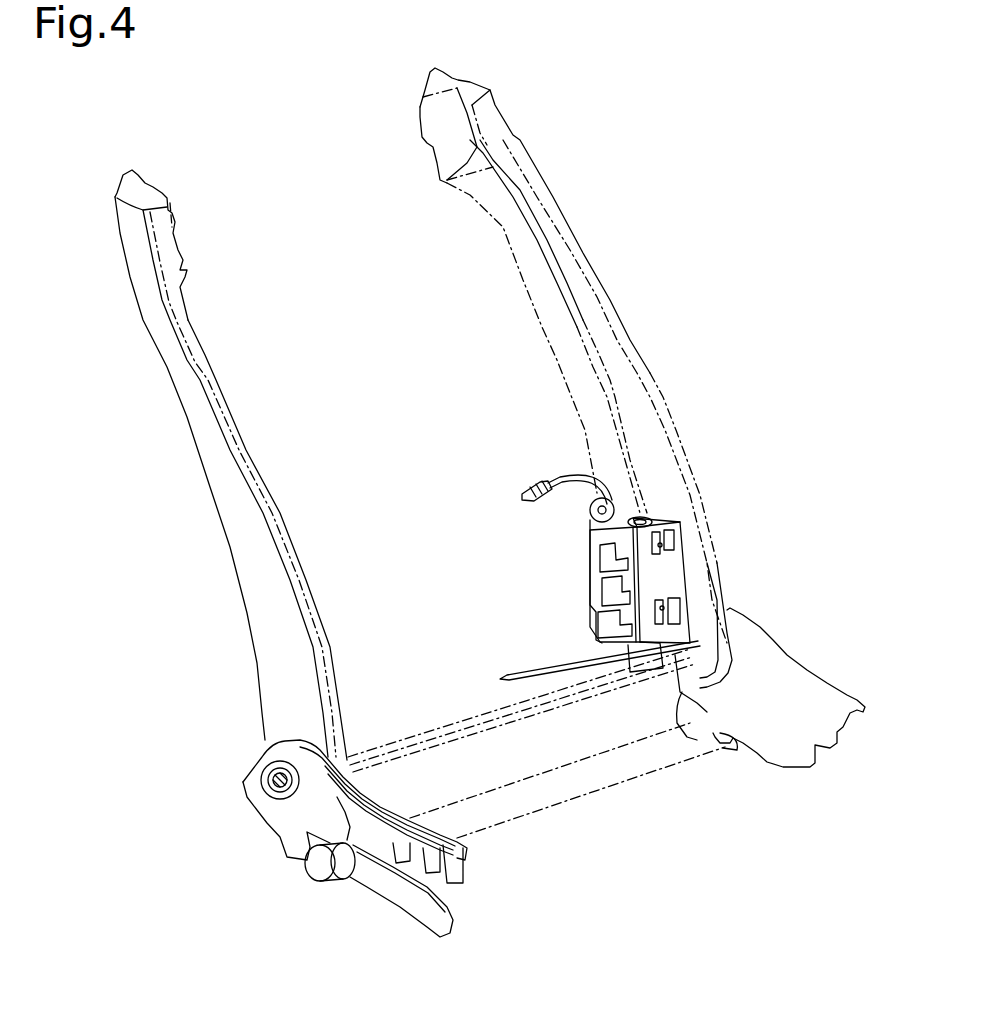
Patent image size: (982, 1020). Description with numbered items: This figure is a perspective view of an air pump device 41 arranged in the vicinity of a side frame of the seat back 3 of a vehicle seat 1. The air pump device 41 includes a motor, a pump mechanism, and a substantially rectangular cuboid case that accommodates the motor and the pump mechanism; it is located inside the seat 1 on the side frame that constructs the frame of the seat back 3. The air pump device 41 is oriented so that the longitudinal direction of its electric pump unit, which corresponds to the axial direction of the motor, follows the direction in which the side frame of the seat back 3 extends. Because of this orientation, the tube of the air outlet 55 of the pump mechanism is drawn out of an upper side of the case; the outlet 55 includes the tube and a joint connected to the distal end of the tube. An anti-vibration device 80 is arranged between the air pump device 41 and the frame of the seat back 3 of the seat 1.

The seat 1 is at (827, 114).
The seat back 3 is at (645, 357).
The air pump device 41 is at (668, 520).
The air outlet 55 is at (523, 495).
The anti-vibration device 80 is at (590, 560).